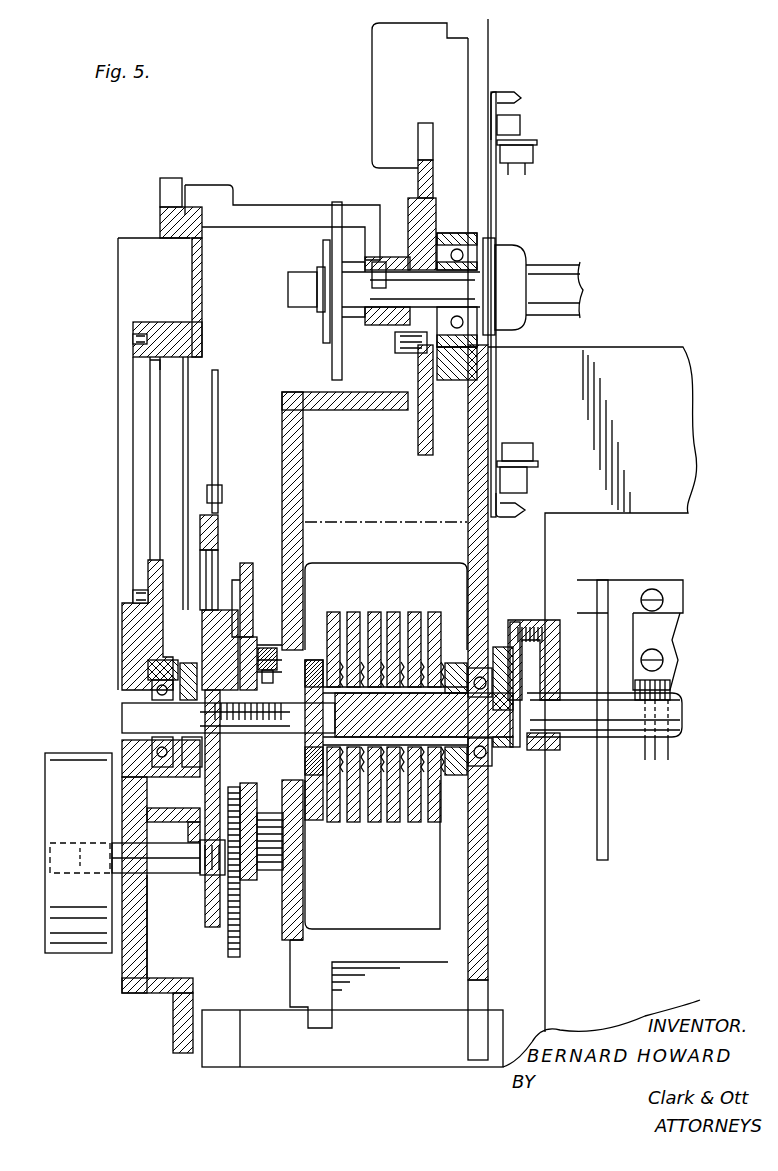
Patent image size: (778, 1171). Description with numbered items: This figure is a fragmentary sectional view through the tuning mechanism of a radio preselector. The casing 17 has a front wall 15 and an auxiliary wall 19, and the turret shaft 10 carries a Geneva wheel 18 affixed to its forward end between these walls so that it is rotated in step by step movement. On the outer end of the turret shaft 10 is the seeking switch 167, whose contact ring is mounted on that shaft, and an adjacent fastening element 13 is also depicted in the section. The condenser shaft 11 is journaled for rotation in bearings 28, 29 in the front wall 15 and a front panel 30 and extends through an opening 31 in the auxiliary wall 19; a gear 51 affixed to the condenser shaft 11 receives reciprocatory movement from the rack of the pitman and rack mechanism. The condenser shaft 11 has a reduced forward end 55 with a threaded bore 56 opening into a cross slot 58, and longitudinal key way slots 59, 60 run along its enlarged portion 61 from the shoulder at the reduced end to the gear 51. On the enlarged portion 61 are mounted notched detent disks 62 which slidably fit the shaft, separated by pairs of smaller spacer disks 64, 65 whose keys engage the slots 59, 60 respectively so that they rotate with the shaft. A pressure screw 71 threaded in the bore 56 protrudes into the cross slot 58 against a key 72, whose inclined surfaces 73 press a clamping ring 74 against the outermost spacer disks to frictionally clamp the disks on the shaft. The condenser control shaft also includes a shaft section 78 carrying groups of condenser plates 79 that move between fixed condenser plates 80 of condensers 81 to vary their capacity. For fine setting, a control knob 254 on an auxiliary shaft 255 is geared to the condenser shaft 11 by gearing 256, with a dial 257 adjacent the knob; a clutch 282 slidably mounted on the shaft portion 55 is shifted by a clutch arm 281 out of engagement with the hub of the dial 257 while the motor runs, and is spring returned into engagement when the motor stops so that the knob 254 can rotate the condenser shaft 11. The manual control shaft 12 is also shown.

The turret shaft 10 is at (567, 280).
The condenser shaft 11 is at (670, 725).
The manual control shaft 12 is at (212, 744).
The mounting bolt 13 is at (486, 356).
The front wall 15 is at (497, 198).
The casing 17 is at (549, 928).
The Geneva wheel 18 is at (418, 148).
The auxiliary wall 19 is at (303, 453).
The bearing 28 is at (497, 656).
The bearing 29 is at (152, 672).
The front panel 30 is at (118, 440).
The opening 31 is at (278, 655).
The gear 51 is at (456, 785).
The reduced forward end 55 is at (186, 664).
The threaded bore 56 is at (122, 730).
The cross slot 58 is at (340, 716).
The key way slot 59 is at (372, 612).
The key way slot 60 is at (352, 822).
The enlarged portion 61 is at (455, 665).
The detent disk 62 is at (396, 640).
The spacer disk 64 is at (331, 822).
The spacer disk 65 is at (394, 822).
The pressure screw 71 is at (122, 705).
The key 72 is at (270, 830).
The inclined surfaces 73 is at (322, 660).
The clamping ring 74 is at (333, 645).
The shaft section 78 is at (588, 742).
The condenser plates 79 is at (645, 760).
The fixed condenser plates 80 is at (670, 690).
The condensers 81 is at (660, 638).
The seeking switch 167 is at (322, 254).
The control knob 254 is at (48, 935).
The auxiliary shaft 255 is at (132, 965).
The gearing 256 is at (244, 947).
The dial 257 is at (218, 395).
The clutch arm 281 is at (262, 648).
The clutch 282 is at (245, 560).